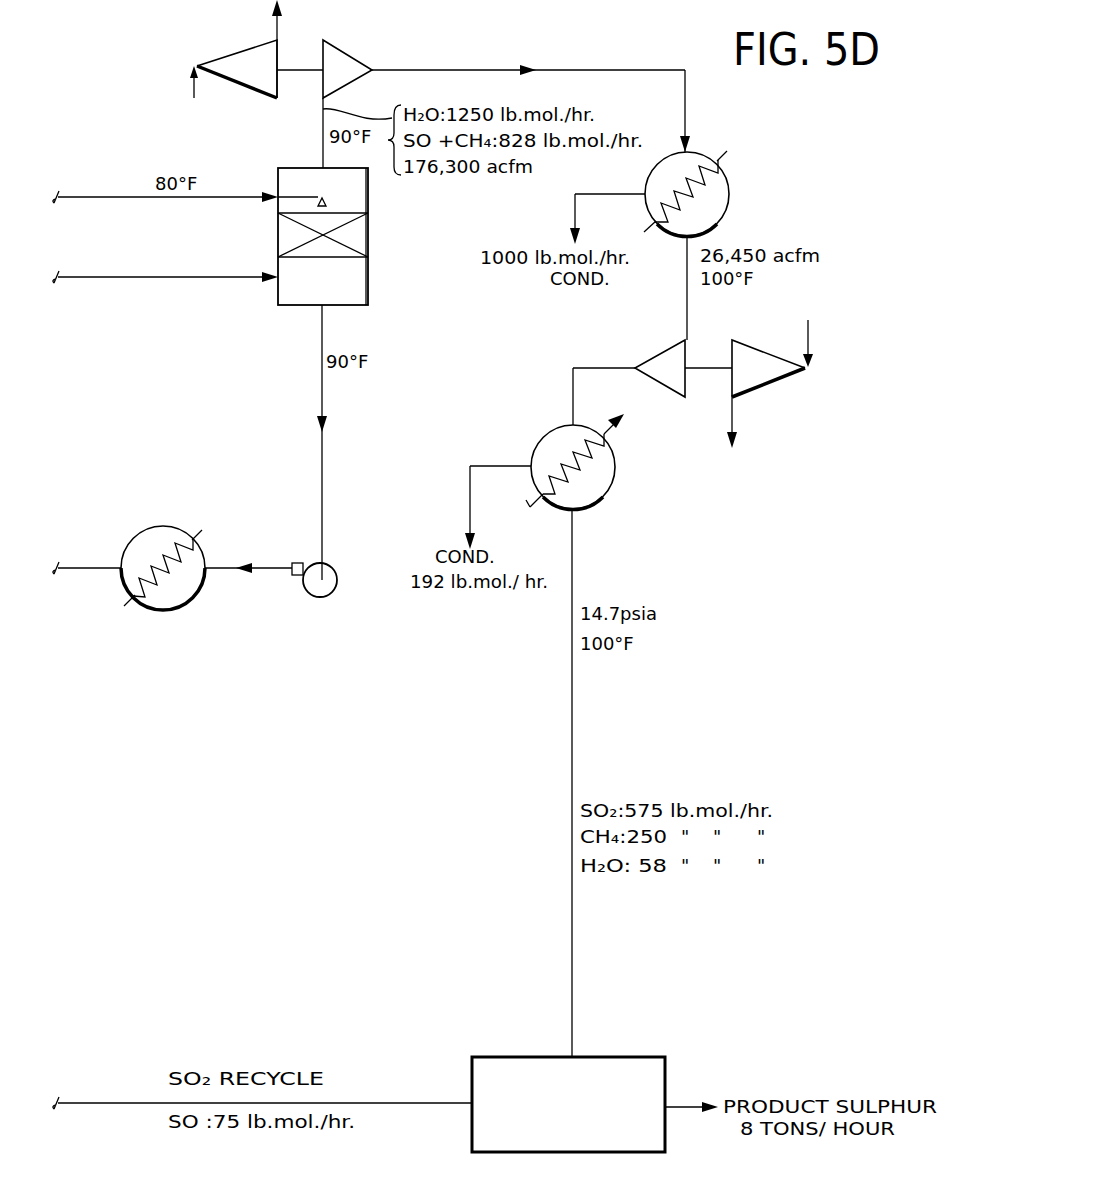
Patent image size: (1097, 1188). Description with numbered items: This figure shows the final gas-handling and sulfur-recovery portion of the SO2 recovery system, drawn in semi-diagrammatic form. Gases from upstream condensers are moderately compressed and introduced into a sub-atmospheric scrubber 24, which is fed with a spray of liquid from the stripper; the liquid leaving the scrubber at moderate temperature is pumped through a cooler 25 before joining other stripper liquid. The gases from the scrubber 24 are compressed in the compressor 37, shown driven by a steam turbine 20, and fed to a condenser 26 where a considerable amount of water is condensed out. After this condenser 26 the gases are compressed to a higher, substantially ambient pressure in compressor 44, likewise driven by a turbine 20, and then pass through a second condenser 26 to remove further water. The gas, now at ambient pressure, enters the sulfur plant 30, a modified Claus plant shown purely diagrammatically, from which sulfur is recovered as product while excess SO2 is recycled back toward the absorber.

The steam turbine 20 is at (244, 56).
The compressor 37 is at (349, 54).
The sub-atmospheric scrubber 24 is at (368, 250).
The cooler 25 is at (150, 532).
The condenser 26 is at (729, 185).
The compressor 44 is at (655, 388).
The sulfur plant 30 is at (637, 1057).